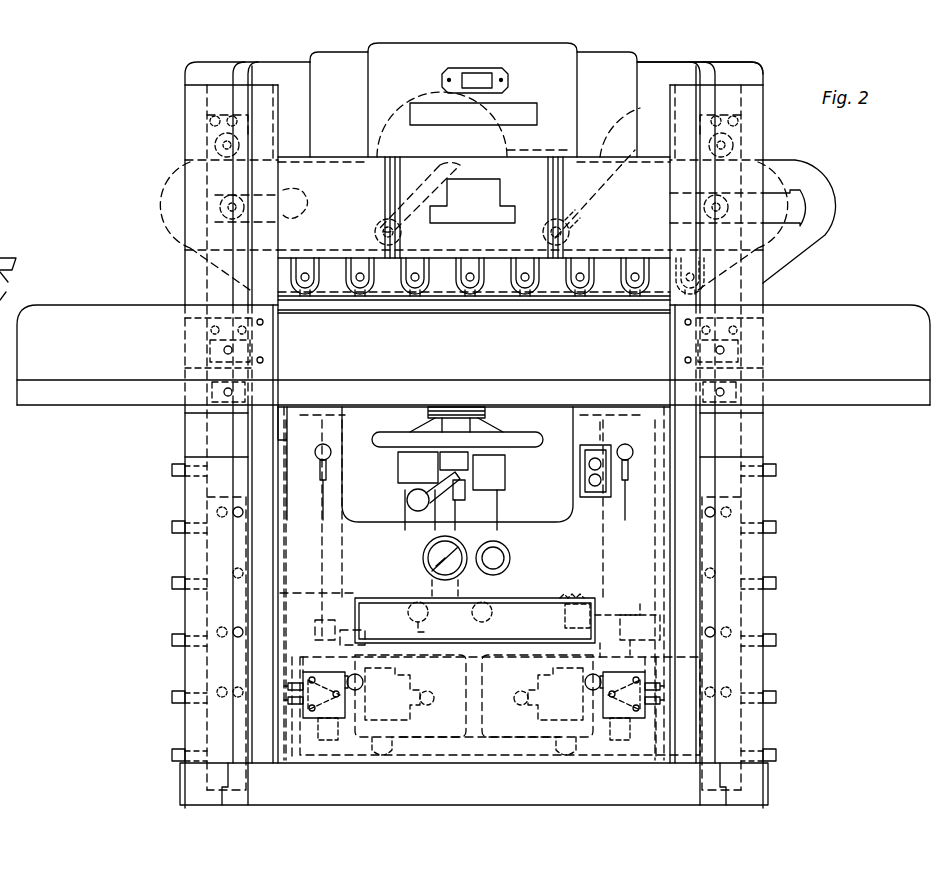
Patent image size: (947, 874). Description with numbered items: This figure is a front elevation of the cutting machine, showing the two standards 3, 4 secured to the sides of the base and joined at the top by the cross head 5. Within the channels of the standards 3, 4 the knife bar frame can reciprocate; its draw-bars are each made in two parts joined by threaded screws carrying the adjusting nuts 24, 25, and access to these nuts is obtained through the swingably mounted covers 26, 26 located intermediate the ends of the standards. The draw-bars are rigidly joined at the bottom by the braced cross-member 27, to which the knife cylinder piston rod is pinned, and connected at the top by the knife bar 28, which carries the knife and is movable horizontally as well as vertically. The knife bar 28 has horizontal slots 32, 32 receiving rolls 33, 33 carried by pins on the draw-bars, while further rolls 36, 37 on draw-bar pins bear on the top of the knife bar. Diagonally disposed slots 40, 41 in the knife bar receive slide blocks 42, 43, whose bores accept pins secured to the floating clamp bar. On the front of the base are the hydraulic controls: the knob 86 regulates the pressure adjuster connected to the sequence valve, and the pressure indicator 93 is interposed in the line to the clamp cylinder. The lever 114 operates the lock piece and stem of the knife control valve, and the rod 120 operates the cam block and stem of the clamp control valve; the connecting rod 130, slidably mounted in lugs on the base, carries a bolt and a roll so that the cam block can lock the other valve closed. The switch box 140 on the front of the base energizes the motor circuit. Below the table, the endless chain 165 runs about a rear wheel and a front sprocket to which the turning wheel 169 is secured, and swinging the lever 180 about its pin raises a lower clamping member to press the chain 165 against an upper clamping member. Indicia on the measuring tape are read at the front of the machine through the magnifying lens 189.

The standard 3 is at (470, 105).
The standard 4 is at (770, 298).
The cross head 5 is at (662, 22).
The adjusting nut 24 is at (207, 366).
The adjusting nut 25 is at (738, 362).
The cover 26 is at (195, 433).
The cross-member 27 is at (343, 598).
The knife bar 28 is at (626, 112).
The horizontal slot 32 is at (776, 222).
The roll 33 is at (185, 204).
The roll 36 is at (185, 143).
The roll 37 is at (748, 131).
The diagonally disposed slot 40 is at (436, 165).
The diagonally disposed slot 41 is at (606, 236).
The slide block 42 is at (398, 224).
The slide block 43 is at (583, 225).
The knob 86 is at (511, 560).
The pressure indicator 93 is at (421, 557).
The lever 114 is at (316, 452).
The rod 120 is at (630, 463).
The connecting rod 130 is at (497, 625).
The switch box 140 is at (595, 499).
The endless chain 165 is at (455, 437).
The turning wheel 169 is at (530, 449).
The lever 180 is at (407, 498).
The magnifying lens 189 is at (485, 79).